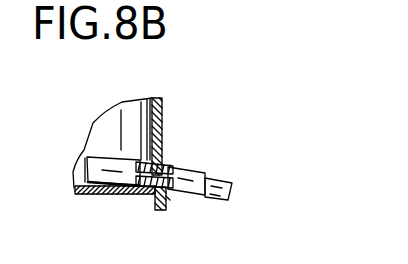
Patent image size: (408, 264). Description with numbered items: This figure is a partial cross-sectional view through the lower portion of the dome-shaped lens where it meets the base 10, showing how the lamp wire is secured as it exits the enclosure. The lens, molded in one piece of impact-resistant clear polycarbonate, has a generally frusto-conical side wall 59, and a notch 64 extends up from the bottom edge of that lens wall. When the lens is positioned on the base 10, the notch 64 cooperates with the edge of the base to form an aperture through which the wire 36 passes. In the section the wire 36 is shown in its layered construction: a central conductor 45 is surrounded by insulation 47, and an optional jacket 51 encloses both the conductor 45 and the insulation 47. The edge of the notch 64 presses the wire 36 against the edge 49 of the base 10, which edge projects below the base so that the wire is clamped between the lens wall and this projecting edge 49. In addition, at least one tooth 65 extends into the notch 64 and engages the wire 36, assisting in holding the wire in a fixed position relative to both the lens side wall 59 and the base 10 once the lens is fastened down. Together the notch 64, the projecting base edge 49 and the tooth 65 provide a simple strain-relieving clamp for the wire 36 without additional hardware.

The base 10 is at (99, 195).
The wire 36 is at (221, 177).
The conductor 45 is at (138, 195).
The insulation 47 is at (190, 162).
The edge of base 49 is at (149, 198).
The jacket 51 is at (199, 167).
The side wall 59 is at (164, 117).
The notch 64 is at (167, 197).
The tooth 65 is at (167, 150).